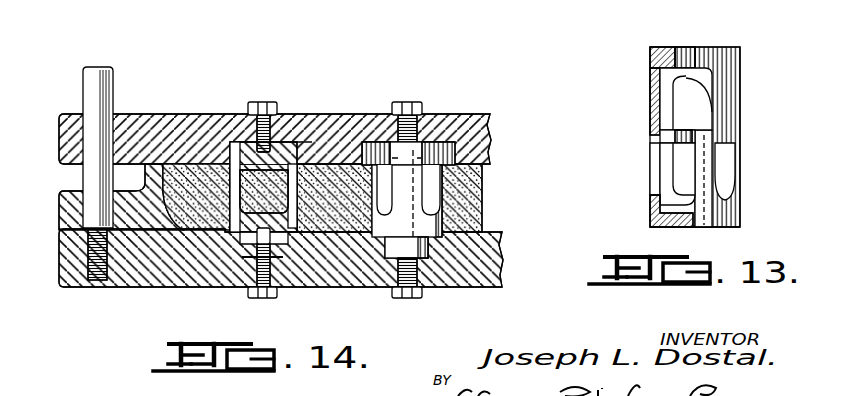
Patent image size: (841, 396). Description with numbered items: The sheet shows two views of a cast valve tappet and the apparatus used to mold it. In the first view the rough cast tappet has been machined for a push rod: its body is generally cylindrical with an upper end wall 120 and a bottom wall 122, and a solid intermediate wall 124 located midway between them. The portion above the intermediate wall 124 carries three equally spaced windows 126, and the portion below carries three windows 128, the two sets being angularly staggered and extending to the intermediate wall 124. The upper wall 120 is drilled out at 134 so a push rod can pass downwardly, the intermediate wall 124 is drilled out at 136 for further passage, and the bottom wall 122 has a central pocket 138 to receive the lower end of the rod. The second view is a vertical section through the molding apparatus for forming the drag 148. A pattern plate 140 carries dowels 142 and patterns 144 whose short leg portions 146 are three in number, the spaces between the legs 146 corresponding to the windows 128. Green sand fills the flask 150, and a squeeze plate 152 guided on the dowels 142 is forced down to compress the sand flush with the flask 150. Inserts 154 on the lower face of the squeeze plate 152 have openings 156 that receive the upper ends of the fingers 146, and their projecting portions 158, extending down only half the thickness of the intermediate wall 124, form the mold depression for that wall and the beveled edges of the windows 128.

In FIG. 13, the upper end wall 120 is at (668, 50).
In FIG. 13, the bottom end wall 122 is at (660, 227).
In FIG. 13, the intermediate wall 124 is at (660, 118).
In FIG. 13, the windows 126 is at (718, 107).
In FIG. 13, the windows 128 is at (735, 165).
In FIG. 13, the drilled opening 134 is at (660, 64).
In FIG. 13, the drilled opening 136 is at (665, 140).
In FIG. 13, the central pocket 138 is at (665, 212).
In FIG. 14, the pattern plate 140 is at (70, 266).
In FIG. 14, the dowels 142 is at (93, 79).
In FIG. 14, the patterns 144 is at (232, 236).
In FIG. 14, the leg portions 146 is at (397, 193).
In FIG. 14, the drag 148 is at (485, 186).
In FIG. 14, the flask 150 is at (145, 176).
In FIG. 14, the squeeze plate 152 is at (488, 130).
In FIG. 14, the inserts 154 is at (248, 150).
In FIG. 14, the openings 156 is at (228, 148).
In FIG. 14, the projecting portions 158 is at (246, 172).